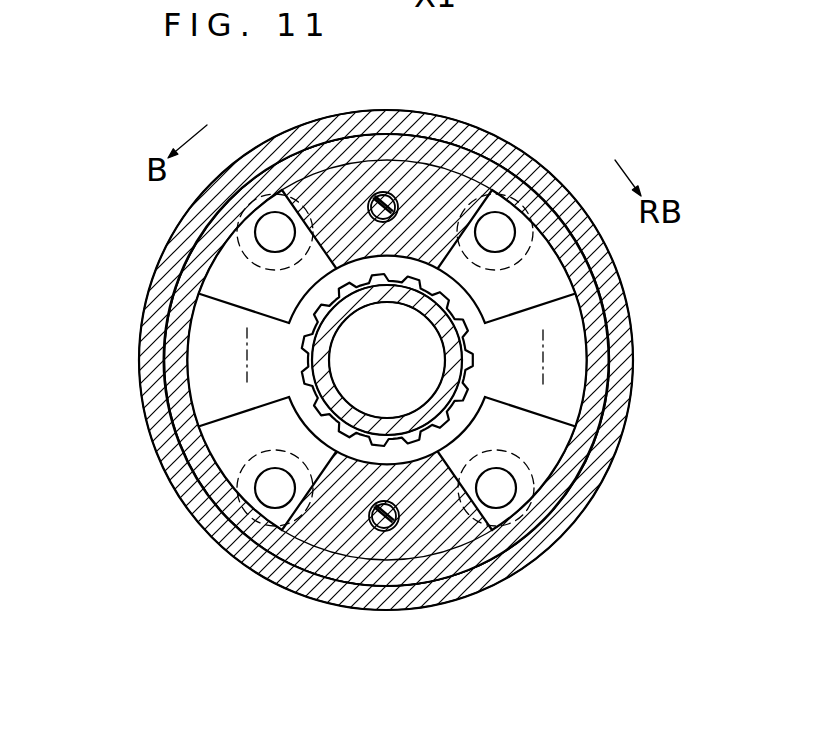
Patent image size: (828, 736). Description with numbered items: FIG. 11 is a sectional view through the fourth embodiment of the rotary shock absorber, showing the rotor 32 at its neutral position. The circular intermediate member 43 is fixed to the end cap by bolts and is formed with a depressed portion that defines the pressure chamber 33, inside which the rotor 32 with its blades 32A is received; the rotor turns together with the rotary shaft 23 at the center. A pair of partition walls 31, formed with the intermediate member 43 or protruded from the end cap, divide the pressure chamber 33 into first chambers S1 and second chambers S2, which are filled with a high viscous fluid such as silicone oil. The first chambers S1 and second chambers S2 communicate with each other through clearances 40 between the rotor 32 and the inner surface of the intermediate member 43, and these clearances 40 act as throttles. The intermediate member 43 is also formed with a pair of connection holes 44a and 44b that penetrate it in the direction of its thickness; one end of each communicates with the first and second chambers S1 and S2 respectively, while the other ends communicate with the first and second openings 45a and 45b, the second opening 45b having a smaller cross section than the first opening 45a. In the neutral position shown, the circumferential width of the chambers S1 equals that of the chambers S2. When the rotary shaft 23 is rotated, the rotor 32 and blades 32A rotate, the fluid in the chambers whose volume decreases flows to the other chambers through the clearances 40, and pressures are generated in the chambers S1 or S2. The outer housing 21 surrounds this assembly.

The outer housing ring 21 is at (573, 507).
The rotary shaft 23 is at (440, 532).
The partition wall 31 is at (440, 233).
The rotor 32 is at (433, 237).
The blade 32A is at (203, 413).
The pressure chamber 33 is at (547, 273).
The clearance 40 is at (387, 357).
The intermediate member 43 is at (583, 447).
The connection hole 44a is at (266, 233).
The connection hole 44b is at (268, 500).
The first opening 45a is at (257, 197).
The second opening 45b is at (237, 489).
The first chamber S1 is at (387, 365).
The second chamber S2 is at (382, 365).